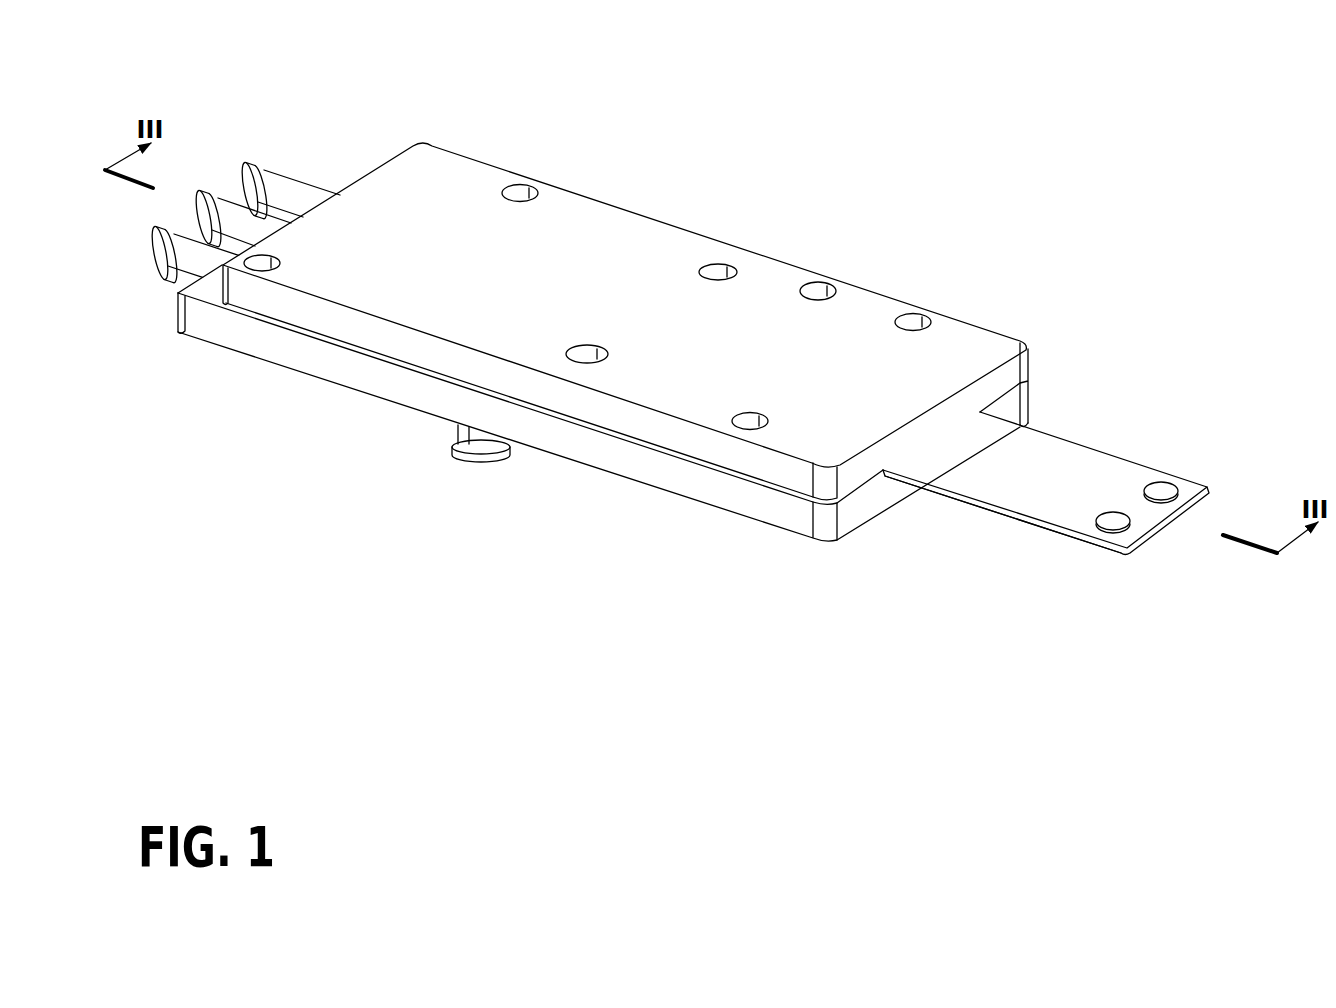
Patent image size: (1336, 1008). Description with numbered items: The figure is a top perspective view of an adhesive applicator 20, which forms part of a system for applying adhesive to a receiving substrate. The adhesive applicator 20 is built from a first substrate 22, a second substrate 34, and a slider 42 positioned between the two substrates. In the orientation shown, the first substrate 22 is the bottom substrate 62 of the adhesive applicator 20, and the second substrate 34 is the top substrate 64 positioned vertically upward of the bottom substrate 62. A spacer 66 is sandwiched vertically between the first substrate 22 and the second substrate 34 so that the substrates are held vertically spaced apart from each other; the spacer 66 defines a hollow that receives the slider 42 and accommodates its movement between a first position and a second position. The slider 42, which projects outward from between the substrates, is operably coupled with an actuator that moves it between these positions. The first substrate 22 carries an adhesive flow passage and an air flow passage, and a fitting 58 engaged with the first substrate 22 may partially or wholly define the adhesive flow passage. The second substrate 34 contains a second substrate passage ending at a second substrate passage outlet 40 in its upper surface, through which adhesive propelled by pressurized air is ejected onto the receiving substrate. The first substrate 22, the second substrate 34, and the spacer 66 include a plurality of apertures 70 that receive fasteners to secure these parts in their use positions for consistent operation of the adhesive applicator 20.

The adhesive applicator 20 is at (640, 322).
The first substrate 22 is at (603, 422).
The second substrate 34 is at (642, 322).
The second substrate passage outlet 40 is at (484, 298).
The slider 42 is at (1080, 468).
The fitting 58 is at (277, 200).
The bottom substrate 62 is at (371, 380).
The top substrate 64 is at (398, 180).
The spacer 66 is at (672, 452).
The apertures 70 is at (518, 190).